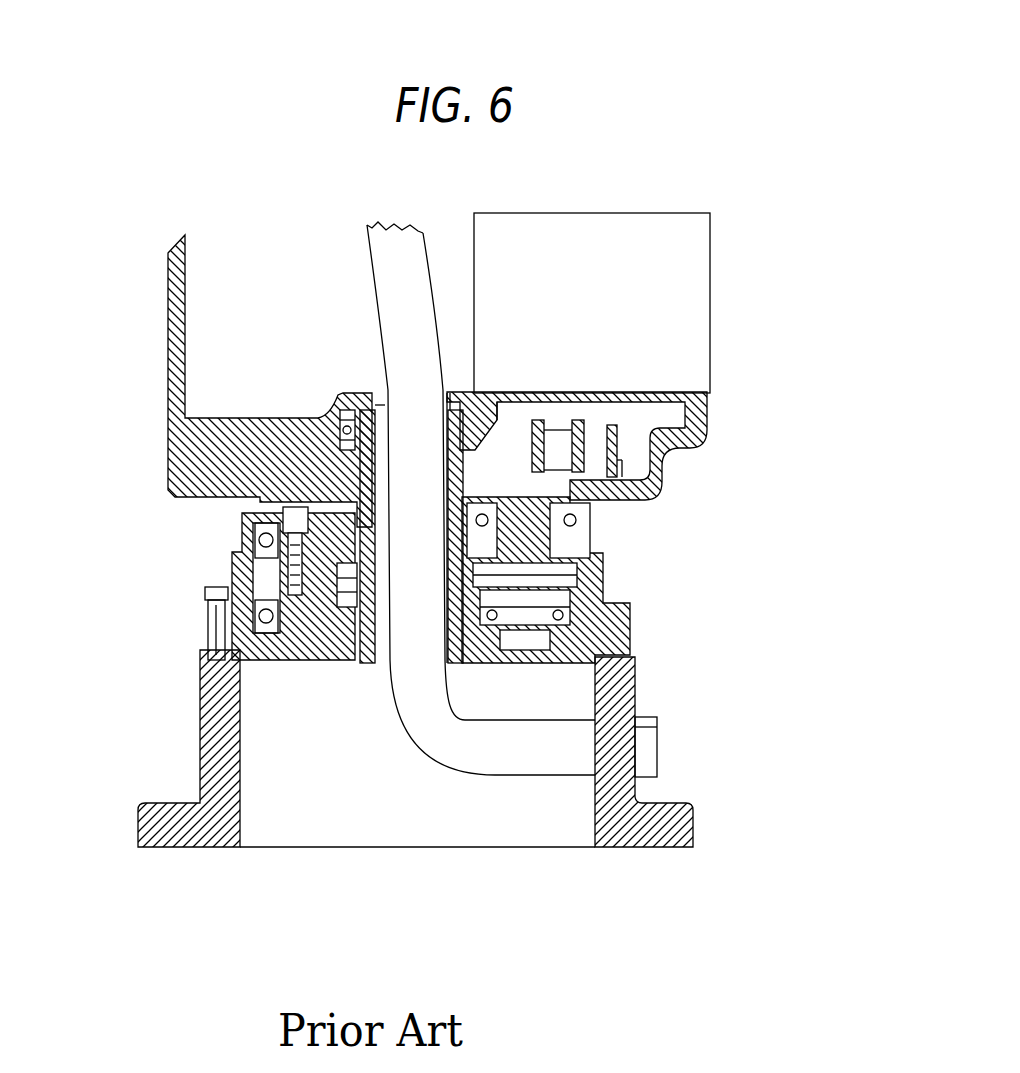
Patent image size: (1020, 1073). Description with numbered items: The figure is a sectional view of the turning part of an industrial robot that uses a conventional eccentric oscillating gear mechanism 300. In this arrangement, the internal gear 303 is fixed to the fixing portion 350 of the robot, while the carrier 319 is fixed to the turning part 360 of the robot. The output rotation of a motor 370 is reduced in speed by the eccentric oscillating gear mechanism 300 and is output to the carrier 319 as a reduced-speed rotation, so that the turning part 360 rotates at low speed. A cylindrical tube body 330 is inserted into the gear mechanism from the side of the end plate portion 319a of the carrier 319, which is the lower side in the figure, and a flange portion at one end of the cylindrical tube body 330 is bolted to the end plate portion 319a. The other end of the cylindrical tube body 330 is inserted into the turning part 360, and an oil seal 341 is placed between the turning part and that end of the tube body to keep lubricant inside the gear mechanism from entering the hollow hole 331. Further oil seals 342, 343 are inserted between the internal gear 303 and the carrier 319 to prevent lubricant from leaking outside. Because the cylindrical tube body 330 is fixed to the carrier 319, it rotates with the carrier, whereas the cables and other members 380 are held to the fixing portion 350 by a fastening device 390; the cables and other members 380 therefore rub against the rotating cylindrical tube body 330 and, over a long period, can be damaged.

The eccentric oscillating gear mechanism 300 is at (660, 579).
The internal gear 303 is at (232, 567).
The carrier 319 is at (280, 660).
The end plate portion 319a is at (315, 653).
The cylindrical tube body 330 is at (370, 663).
The hollow hole 331 is at (450, 655).
The oil seal 341 is at (345, 393).
The oil seal 342 is at (590, 657).
The oil seal 343 is at (587, 520).
The fixing portion 350 is at (657, 850).
The turning part 360 is at (168, 306).
The motor 370 is at (726, 303).
The cables and other members 380 is at (517, 763).
The fastening device 390 is at (643, 722).